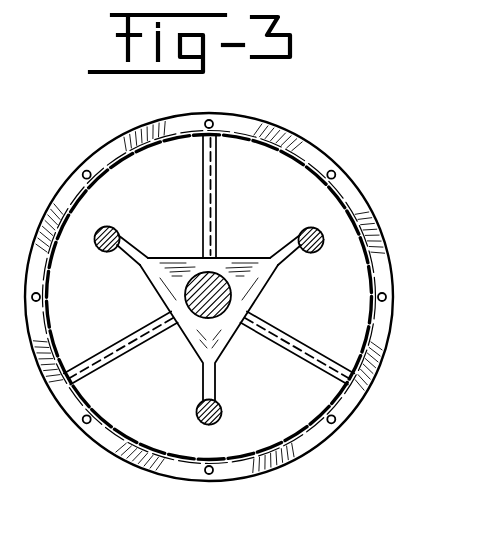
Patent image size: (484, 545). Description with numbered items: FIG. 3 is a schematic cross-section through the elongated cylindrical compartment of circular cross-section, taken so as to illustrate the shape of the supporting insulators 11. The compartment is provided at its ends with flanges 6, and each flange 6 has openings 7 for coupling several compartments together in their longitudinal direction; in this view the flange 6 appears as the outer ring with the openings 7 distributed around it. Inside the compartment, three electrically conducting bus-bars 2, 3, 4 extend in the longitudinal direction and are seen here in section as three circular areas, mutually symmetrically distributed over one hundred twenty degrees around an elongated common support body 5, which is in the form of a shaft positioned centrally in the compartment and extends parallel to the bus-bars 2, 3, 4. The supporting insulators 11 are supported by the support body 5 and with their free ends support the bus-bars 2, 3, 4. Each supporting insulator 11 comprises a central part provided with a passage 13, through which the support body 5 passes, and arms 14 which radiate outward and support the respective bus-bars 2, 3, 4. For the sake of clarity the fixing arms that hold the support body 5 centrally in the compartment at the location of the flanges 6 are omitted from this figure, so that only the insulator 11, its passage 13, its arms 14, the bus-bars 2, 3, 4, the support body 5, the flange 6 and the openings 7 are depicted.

The bus-bar 2 is at (109, 227).
The bus-bar 3 is at (309, 228).
The bus-bar 4 is at (223, 410).
The support body 5 is at (212, 286).
The flange 6 is at (288, 145).
The opening 7 is at (336, 175).
The supporting insulator 11 is at (256, 297).
The passage 13 is at (188, 316).
The arm 14 is at (134, 257).